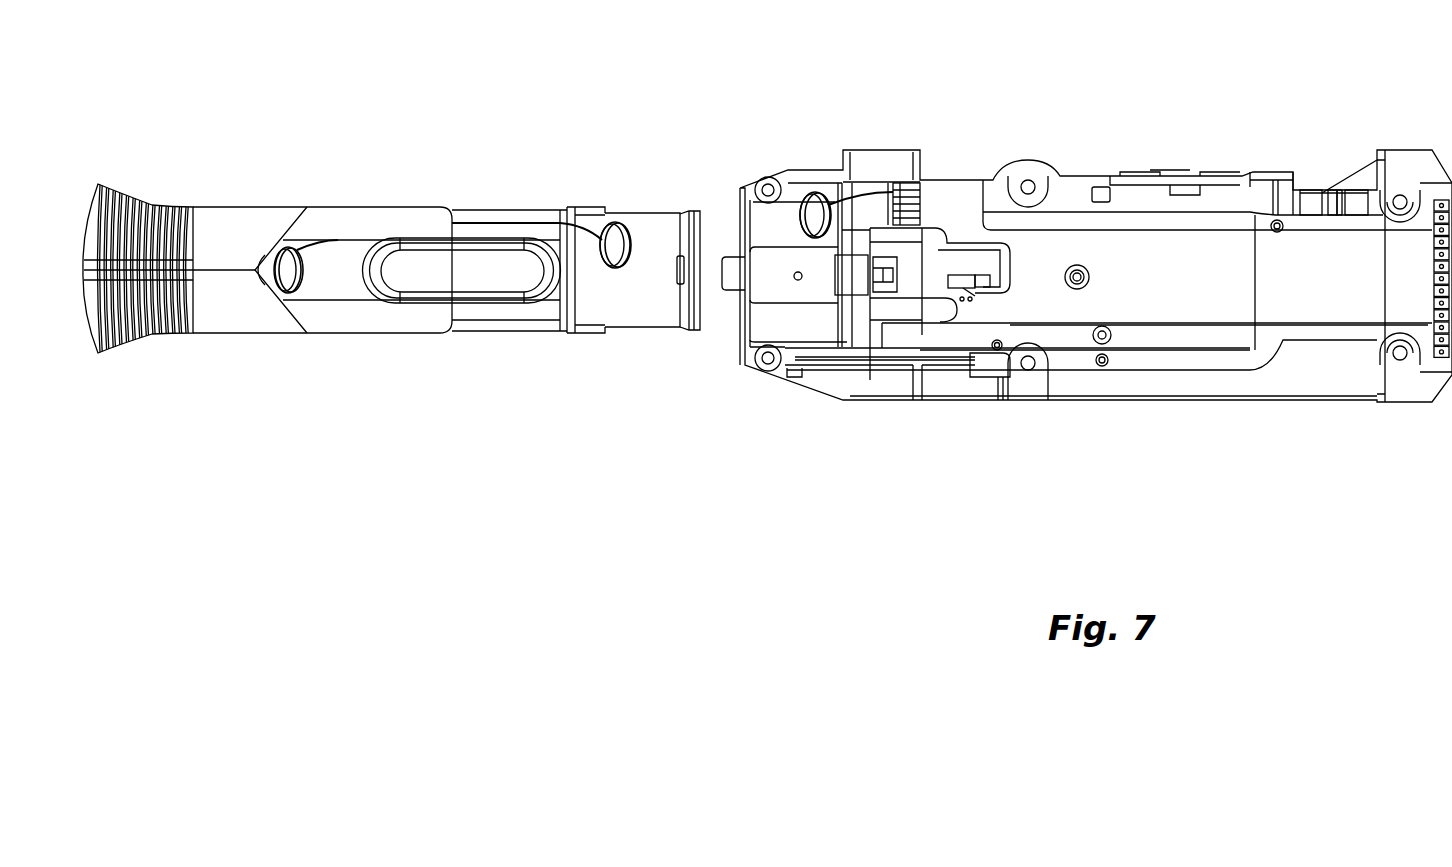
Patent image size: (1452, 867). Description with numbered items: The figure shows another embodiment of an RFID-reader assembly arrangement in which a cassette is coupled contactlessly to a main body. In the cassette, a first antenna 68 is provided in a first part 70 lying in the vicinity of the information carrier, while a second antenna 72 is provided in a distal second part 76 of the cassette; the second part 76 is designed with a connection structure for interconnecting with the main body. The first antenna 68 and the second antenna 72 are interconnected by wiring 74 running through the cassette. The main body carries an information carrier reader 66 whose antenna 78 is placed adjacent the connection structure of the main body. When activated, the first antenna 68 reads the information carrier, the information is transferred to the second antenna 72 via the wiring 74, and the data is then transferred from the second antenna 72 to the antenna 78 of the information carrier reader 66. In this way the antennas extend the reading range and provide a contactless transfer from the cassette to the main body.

The information carrier reader 66 is at (945, 205).
The first antenna 68 is at (288, 293).
The first part 70 is at (342, 112).
The second antenna 72 is at (618, 268).
The wiring 74 is at (490, 223).
The second part 76 is at (692, 113).
The antenna 78 is at (816, 194).